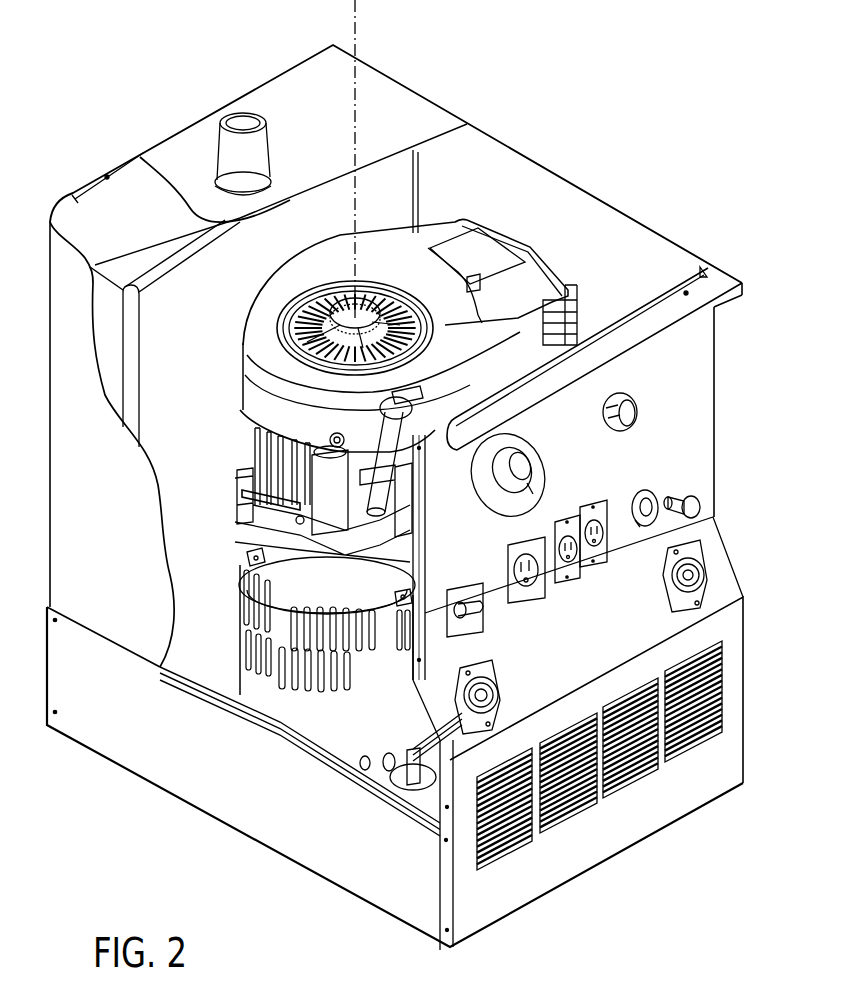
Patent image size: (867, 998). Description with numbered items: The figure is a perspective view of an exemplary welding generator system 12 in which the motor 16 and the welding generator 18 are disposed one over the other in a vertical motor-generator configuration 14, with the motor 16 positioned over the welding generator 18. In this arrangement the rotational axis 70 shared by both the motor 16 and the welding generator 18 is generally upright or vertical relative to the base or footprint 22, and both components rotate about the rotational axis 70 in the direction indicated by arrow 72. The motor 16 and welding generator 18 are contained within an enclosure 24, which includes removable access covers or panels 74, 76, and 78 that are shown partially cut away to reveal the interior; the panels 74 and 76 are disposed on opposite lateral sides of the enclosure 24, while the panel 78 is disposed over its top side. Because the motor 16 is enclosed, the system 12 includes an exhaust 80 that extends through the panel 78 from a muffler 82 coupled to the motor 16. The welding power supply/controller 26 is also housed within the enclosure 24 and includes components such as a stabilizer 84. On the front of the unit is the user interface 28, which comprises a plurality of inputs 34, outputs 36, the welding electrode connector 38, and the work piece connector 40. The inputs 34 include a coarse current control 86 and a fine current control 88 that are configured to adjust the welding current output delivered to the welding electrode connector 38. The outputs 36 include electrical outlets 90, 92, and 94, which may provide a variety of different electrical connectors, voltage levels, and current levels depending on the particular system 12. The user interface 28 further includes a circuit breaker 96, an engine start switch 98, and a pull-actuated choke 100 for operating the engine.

The welding generator system 12 is at (590, 92).
The vertical motor-generator configuration 14 is at (477, 148).
The motor 16 is at (497, 212).
The welding generator 18 is at (211, 653).
The base or footprint 22 is at (288, 861).
The enclosure 24 is at (267, 813).
The welding power supply/controller 26 is at (357, 722).
The user interface 28 is at (697, 337).
The inputs 34 is at (603, 437).
The outputs 36 is at (491, 546).
The welding electrode connector 38 is at (705, 560).
The work piece connector 40 is at (497, 673).
The rotational axis 70 is at (357, 24).
The arrow 72 is at (334, 142).
The panel 74 is at (68, 462).
The panel 76 is at (603, 200).
The panel 78 is at (430, 98).
The exhaust 80 is at (232, 152).
The muffler 82 is at (155, 235).
The stabilizer 84 is at (398, 790).
The coarse current control 86 is at (500, 485).
The fine current control 88 is at (640, 418).
The electrical outlet 90 is at (530, 588).
The electrical outlet 92 is at (570, 563).
The electrical outlet 94 is at (603, 547).
The circuit breaker 96 is at (418, 625).
The engine start switch 98 is at (655, 495).
The pull-actuated choke 100 is at (700, 500).